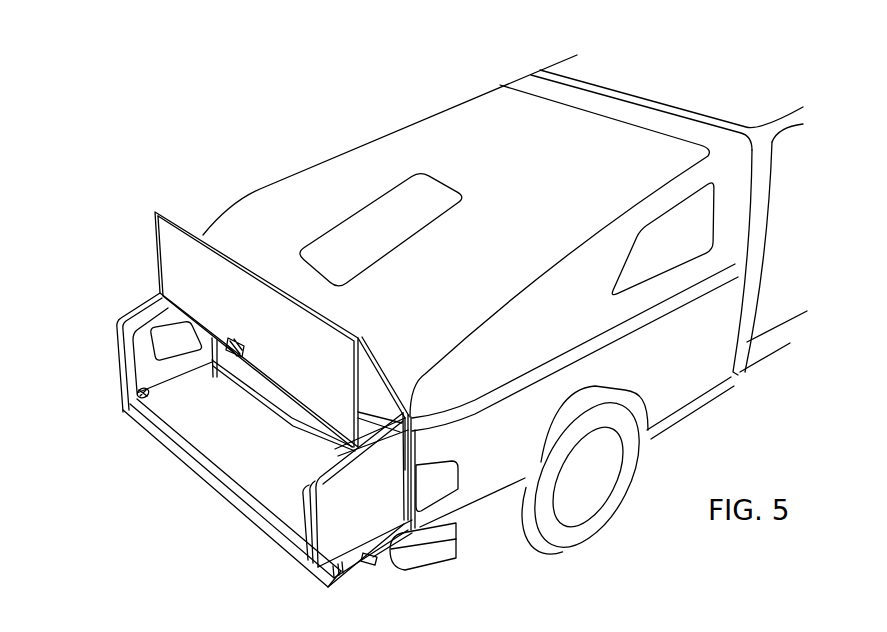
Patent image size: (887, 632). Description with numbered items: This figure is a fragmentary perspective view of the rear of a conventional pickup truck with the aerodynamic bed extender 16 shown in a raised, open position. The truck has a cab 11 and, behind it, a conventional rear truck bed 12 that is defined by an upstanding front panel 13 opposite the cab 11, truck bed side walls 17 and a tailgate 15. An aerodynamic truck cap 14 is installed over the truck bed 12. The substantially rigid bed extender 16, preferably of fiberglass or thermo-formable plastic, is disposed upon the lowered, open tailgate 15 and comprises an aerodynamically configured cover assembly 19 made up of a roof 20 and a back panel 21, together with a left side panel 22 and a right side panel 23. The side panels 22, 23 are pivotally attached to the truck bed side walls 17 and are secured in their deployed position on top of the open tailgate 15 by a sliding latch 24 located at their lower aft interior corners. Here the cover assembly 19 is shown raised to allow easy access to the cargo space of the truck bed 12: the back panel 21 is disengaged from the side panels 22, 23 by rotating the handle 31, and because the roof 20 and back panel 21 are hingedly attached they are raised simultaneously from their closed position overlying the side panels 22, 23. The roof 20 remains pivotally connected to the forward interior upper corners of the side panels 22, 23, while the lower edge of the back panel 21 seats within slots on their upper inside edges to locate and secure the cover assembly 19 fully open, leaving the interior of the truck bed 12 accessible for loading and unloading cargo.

The cab 11 is at (573, 66).
The truck bed 12 is at (660, 367).
The upstanding front panel 13 is at (750, 286).
The aerodynamic truck cap 14 is at (380, 150).
The tailgate 15 is at (215, 490).
The aerodynamic bed extender 16 is at (145, 175).
The truck bed side walls 17 is at (472, 495).
The cover assembly 19 is at (189, 212).
The roof 20 is at (373, 360).
The back panel 21 is at (173, 242).
The left side panel 22 is at (120, 367).
The right side panel 23 is at (338, 505).
The sliding latch 24 is at (123, 398).
The handle 31 is at (215, 378).